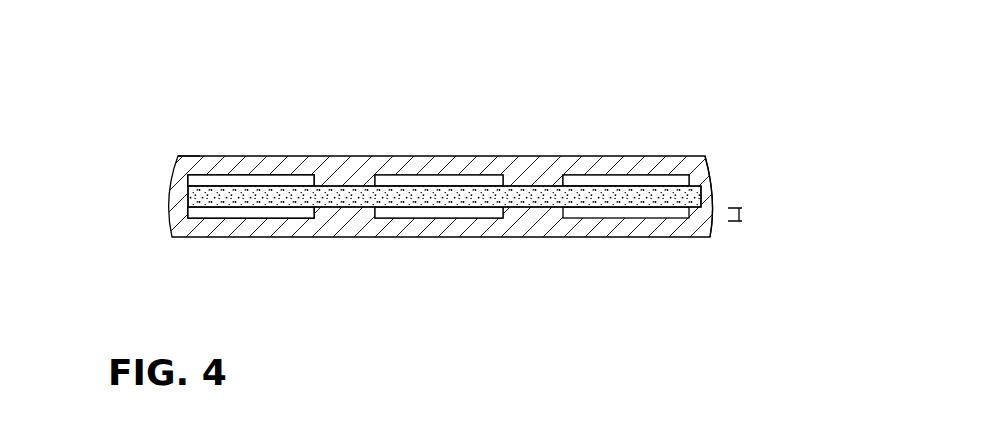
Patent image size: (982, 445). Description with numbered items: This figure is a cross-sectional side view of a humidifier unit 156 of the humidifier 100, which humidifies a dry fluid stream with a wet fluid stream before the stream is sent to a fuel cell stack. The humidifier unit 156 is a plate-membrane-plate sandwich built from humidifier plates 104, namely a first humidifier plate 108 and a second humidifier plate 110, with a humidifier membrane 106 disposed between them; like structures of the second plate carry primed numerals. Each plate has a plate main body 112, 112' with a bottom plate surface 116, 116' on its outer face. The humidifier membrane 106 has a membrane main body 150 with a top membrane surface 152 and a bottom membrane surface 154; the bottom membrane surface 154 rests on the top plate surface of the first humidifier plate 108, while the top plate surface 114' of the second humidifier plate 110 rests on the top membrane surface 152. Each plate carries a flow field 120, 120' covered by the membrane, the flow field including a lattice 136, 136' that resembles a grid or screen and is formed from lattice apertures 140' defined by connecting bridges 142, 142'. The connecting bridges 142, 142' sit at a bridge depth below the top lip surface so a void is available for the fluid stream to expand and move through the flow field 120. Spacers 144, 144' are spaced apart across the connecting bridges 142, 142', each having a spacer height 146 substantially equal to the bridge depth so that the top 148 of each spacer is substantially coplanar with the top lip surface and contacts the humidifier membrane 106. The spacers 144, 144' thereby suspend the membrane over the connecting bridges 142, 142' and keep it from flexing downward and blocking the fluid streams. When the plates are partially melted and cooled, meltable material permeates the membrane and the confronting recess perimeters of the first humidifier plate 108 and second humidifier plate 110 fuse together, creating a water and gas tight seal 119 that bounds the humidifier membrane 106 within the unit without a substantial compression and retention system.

The humidifier 100 is at (688, 120).
The humidifier unit 156 is at (447, 193).
The humidifier plate 104 is at (224, 137).
The second humidifier plate 110 is at (447, 151).
The first humidifier plate 108 is at (447, 248).
The top plate surface 114' is at (162, 141).
The humidifier membrane 106 is at (700, 195).
The membrane main body 150 is at (725, 182).
The plate main body 112' is at (274, 135).
The flow field 120' is at (251, 180).
The lattice 136' is at (251, 145).
The lattice aperture 140' is at (213, 181).
The plate main body 112 is at (272, 259).
The flow field 120 is at (336, 247).
The lattice 136 is at (334, 258).
The bottom membrane surface 154 is at (190, 209).
The bottom plate surface 116' is at (439, 135).
The spacers 144' is at (458, 149).
The bottom plate surface 116 is at (439, 259).
The spacers 144 is at (452, 245).
The connecting bridges 142' is at (626, 140).
The top membrane surface 152 is at (640, 183).
The connecting bridges 142 is at (626, 254).
The seal 119 is at (172, 196).
The top 148 is at (352, 206).
The spacer height 146 is at (742, 214).